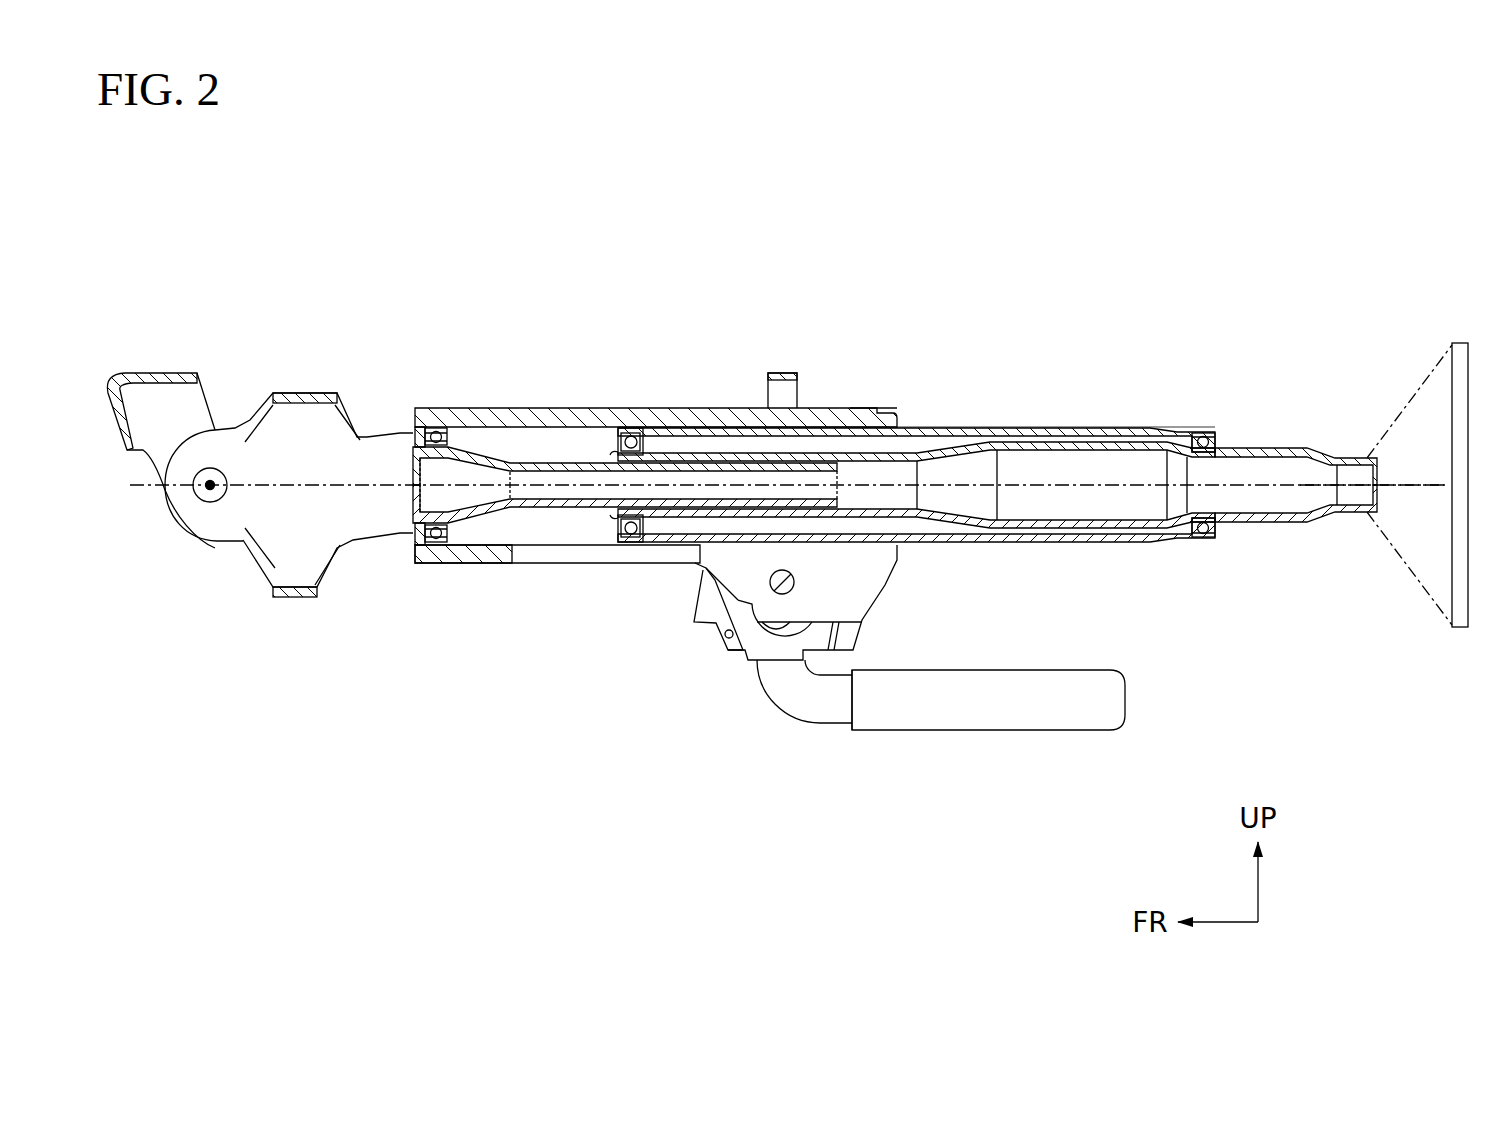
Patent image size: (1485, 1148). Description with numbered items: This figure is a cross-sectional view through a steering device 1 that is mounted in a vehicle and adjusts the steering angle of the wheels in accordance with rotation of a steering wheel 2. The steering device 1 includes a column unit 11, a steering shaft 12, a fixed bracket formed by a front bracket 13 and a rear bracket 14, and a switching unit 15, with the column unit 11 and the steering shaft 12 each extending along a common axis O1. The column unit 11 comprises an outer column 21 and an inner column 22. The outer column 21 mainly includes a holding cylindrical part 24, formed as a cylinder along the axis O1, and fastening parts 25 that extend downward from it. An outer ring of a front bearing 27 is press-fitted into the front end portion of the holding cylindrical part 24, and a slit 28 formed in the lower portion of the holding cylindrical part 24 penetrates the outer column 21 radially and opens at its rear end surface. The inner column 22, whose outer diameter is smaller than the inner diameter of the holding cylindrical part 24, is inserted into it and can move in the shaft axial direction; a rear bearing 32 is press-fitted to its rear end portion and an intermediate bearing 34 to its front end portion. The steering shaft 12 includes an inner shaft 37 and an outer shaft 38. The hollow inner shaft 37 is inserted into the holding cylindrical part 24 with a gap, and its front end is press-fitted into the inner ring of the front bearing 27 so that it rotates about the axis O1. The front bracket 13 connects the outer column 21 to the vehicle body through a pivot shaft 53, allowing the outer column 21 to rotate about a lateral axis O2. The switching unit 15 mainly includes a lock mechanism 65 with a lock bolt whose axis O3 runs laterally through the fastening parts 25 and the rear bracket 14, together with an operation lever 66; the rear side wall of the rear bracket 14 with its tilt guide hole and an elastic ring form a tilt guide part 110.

The steering device 1 is at (320, 248).
The steering wheel 2 is at (1458, 343).
The column unit 11 is at (875, 300).
The steering shaft 12 is at (1350, 520).
The front bracket 13 is at (156, 370).
The rear bracket 14 is at (772, 368).
The switching unit 15 is at (949, 740).
The outer column 21 is at (868, 404).
The inner column 22 is at (1025, 425).
The holding cylindrical part 24 is at (607, 422).
The fastening parts 25 is at (865, 585).
The front bearing 27 is at (433, 430).
The slit 28 is at (516, 556).
The rear bearing 32 is at (1202, 440).
The intermediate bearing 34 is at (618, 522).
The inner shaft 37 is at (572, 508).
The outer shaft 38 is at (1120, 440).
The pivot shaft 53 is at (222, 494).
The lock mechanism 65 is at (733, 597).
The operation lever 66 is at (1053, 705).
The tilt guide part 110 is at (732, 633).
The axis O1 is at (1413, 483).
The axis O2 is at (210, 500).
The axis O3 is at (781, 583).